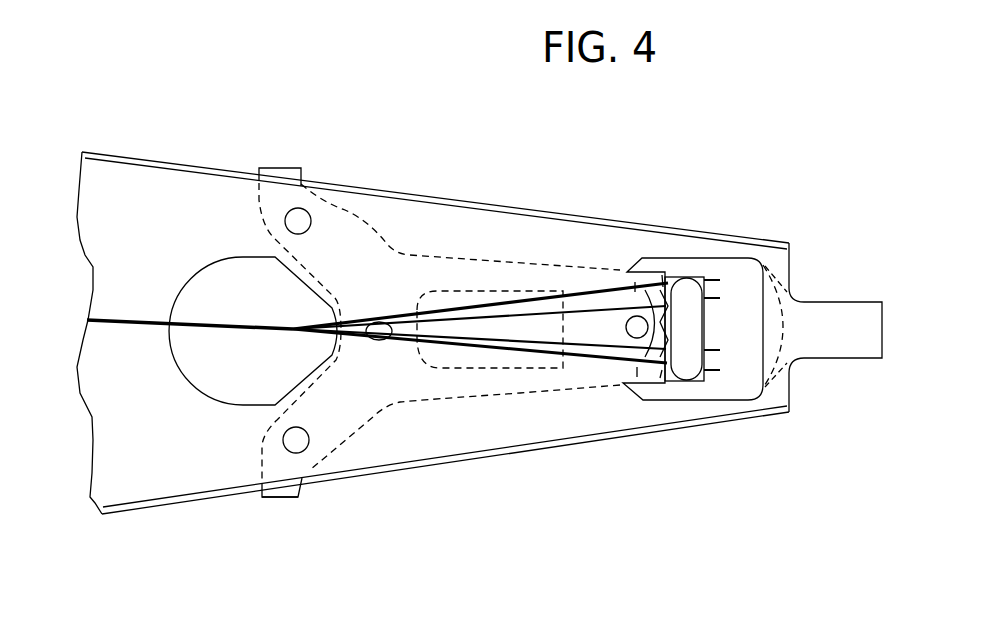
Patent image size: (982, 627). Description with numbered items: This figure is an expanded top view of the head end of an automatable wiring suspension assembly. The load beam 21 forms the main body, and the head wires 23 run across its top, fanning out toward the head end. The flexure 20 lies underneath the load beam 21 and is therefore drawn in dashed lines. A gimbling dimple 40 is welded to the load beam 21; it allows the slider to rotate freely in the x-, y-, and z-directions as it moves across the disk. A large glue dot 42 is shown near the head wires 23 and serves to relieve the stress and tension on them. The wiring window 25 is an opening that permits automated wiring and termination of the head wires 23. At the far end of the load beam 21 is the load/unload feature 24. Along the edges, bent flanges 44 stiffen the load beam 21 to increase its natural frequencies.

The load beam 21 is at (137, 218).
The flexure 20 is at (337, 235).
The head wires 23 is at (532, 310).
The glue dot 42 is at (688, 298).
The gimbling dimple 40 is at (635, 327).
The wiring window 25 is at (738, 370).
The load/unload feature 24 is at (850, 340).
The bent flanges 44 is at (353, 470).